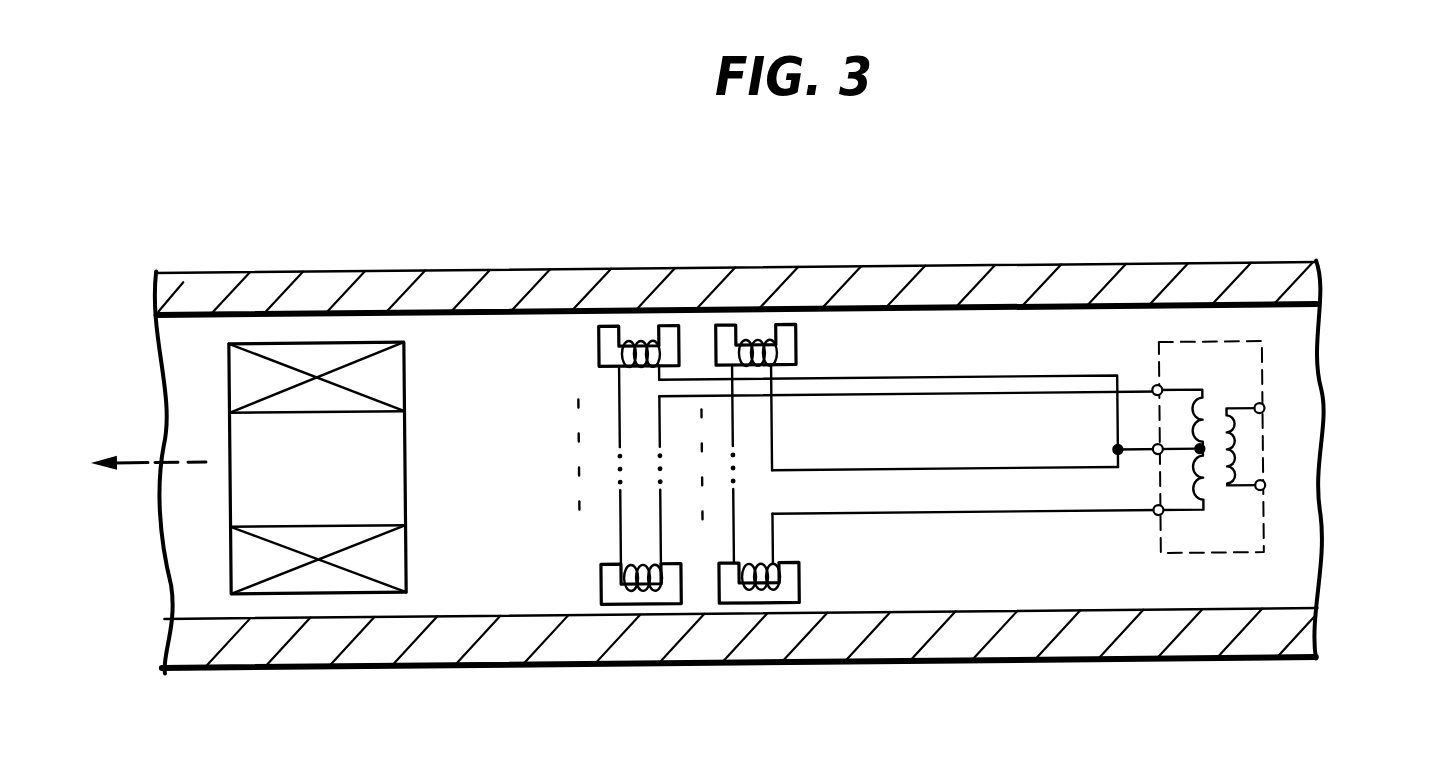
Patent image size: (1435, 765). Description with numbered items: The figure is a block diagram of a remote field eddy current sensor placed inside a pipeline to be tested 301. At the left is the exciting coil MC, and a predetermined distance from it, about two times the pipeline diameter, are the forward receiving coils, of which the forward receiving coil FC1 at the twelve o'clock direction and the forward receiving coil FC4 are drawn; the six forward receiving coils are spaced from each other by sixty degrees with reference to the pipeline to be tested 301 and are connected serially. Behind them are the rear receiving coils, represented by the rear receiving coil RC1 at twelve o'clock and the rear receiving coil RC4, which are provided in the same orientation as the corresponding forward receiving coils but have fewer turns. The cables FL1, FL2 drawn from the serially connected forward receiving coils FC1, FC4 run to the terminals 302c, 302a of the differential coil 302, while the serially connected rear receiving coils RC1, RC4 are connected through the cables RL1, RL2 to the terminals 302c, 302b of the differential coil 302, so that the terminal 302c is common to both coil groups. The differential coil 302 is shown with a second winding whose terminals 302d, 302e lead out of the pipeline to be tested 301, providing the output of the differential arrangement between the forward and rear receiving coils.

The pipeline to be tested 301 is at (1047, 274).
The differential coil 302 is at (1253, 343).
The terminal 302a is at (1155, 389).
The terminal 302b is at (1154, 518).
The terminal 302c is at (1154, 458).
The terminal 302d is at (1265, 411).
The terminal 302e is at (1265, 490).
The exciting coil MC is at (398, 393).
The forward receiving coil FC1 is at (602, 349).
The forward receiving coil FC4 is at (602, 583).
The rear receiving coil RC1 is at (723, 325).
The rear receiving coil RC4 is at (730, 598).
The cable FL1 is at (937, 378).
The cable FL2 is at (941, 396).
The cable RL1 is at (1025, 470).
The cable RL2 is at (975, 515).